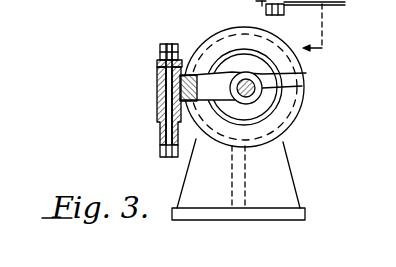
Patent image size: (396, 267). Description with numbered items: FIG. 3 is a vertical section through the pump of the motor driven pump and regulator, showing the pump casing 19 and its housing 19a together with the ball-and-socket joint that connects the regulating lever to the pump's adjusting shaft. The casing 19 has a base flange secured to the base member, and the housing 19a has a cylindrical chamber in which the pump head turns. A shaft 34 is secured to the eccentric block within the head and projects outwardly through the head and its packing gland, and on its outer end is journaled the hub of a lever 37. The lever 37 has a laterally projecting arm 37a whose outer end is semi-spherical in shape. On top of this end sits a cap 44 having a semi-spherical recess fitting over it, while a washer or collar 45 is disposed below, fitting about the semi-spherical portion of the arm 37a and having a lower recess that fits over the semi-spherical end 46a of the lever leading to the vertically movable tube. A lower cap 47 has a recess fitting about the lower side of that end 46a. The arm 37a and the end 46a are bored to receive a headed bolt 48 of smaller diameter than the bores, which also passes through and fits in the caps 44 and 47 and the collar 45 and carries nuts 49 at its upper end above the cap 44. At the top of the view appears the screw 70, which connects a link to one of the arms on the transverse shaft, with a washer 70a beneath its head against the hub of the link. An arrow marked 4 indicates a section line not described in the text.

The section line of FIG. 4 is at (322, 30).
The casing 19 is at (282, 170).
The housing 19a is at (292, 107).
The shaft 34 is at (302, 86).
The lever 37 is at (306, 73).
The arm 37a is at (178, 80).
The cap 44 is at (157, 64).
The washer or collar 45 is at (163, 103).
The semi-spherical end 46a is at (160, 126).
The lower cap 47 is at (160, 148).
The headed bolt 48 is at (172, 45).
The nuts 49 is at (160, 48).
The screw 70 is at (276, 16).
The washer 70a is at (263, 4).